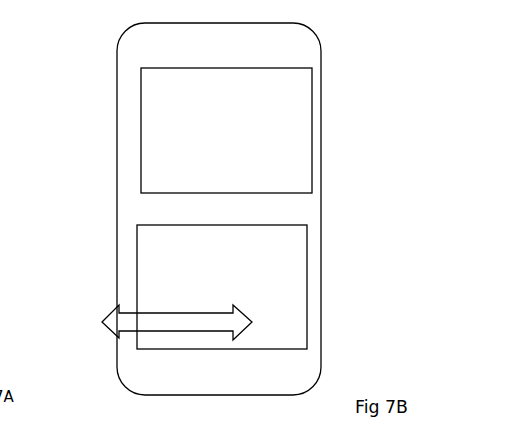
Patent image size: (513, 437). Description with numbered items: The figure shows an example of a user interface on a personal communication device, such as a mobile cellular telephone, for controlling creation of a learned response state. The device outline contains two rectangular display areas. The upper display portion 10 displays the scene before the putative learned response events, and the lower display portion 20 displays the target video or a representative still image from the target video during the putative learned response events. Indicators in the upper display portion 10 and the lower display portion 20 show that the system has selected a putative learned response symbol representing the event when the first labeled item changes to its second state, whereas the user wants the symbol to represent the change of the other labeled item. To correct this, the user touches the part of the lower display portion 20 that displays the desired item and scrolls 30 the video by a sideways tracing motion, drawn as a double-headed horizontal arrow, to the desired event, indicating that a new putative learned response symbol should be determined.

The upper display portion 10 is at (152, 138).
The lower display portion 20 is at (150, 275).
The scrolls 30 is at (121, 316).